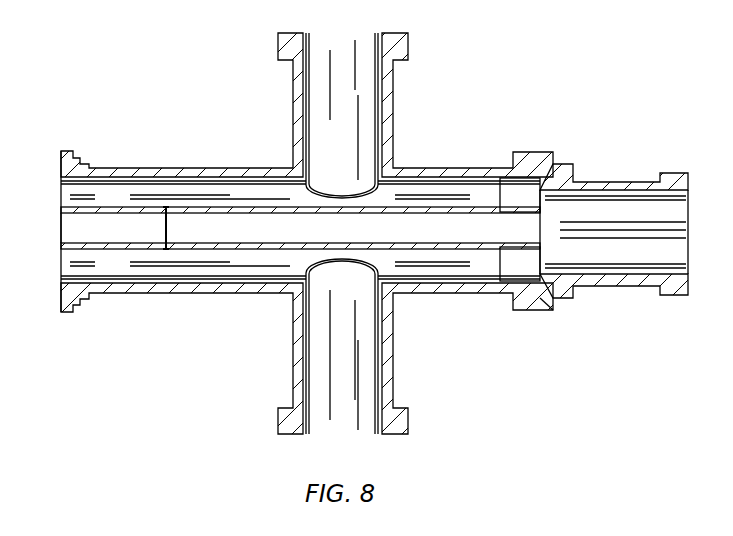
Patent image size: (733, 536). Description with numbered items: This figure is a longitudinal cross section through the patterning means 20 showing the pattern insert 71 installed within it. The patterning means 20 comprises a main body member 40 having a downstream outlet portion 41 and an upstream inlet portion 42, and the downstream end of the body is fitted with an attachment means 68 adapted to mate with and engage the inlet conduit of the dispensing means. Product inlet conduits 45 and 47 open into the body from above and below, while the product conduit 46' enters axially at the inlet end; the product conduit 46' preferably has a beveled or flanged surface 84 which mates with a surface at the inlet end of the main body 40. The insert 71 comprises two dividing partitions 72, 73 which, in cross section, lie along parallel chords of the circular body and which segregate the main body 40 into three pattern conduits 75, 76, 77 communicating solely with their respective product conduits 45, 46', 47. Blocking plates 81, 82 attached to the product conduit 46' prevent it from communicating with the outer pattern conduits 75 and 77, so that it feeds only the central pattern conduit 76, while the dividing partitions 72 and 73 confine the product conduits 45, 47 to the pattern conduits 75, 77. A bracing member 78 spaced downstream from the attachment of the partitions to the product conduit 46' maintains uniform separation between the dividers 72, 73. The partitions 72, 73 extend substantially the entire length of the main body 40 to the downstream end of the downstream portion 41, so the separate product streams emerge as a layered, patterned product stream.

The patterning means 20 is at (271, 148).
The main body member 40 is at (207, 294).
The downstream outlet portion 41 is at (144, 168).
The upstream inlet portion 42 is at (423, 170).
The product inlet conduit 45 is at (394, 112).
The product conduit 46' is at (614, 222).
The product inlet conduit 47 is at (292, 344).
The attachment means 68 is at (67, 150).
The pattern insert 71 is at (437, 200).
The dividing means 72 is at (266, 208).
The dividing means 73 is at (240, 249).
The pattern conduit 75 is at (100, 201).
The pattern conduit 76 is at (65, 232).
The pattern conduit 77 is at (100, 274).
The bracing member 78 is at (170, 234).
The blocking plate 81 is at (534, 200).
The blocking plate 82 is at (535, 265).
The beveled or flanged surface 84 is at (556, 302).